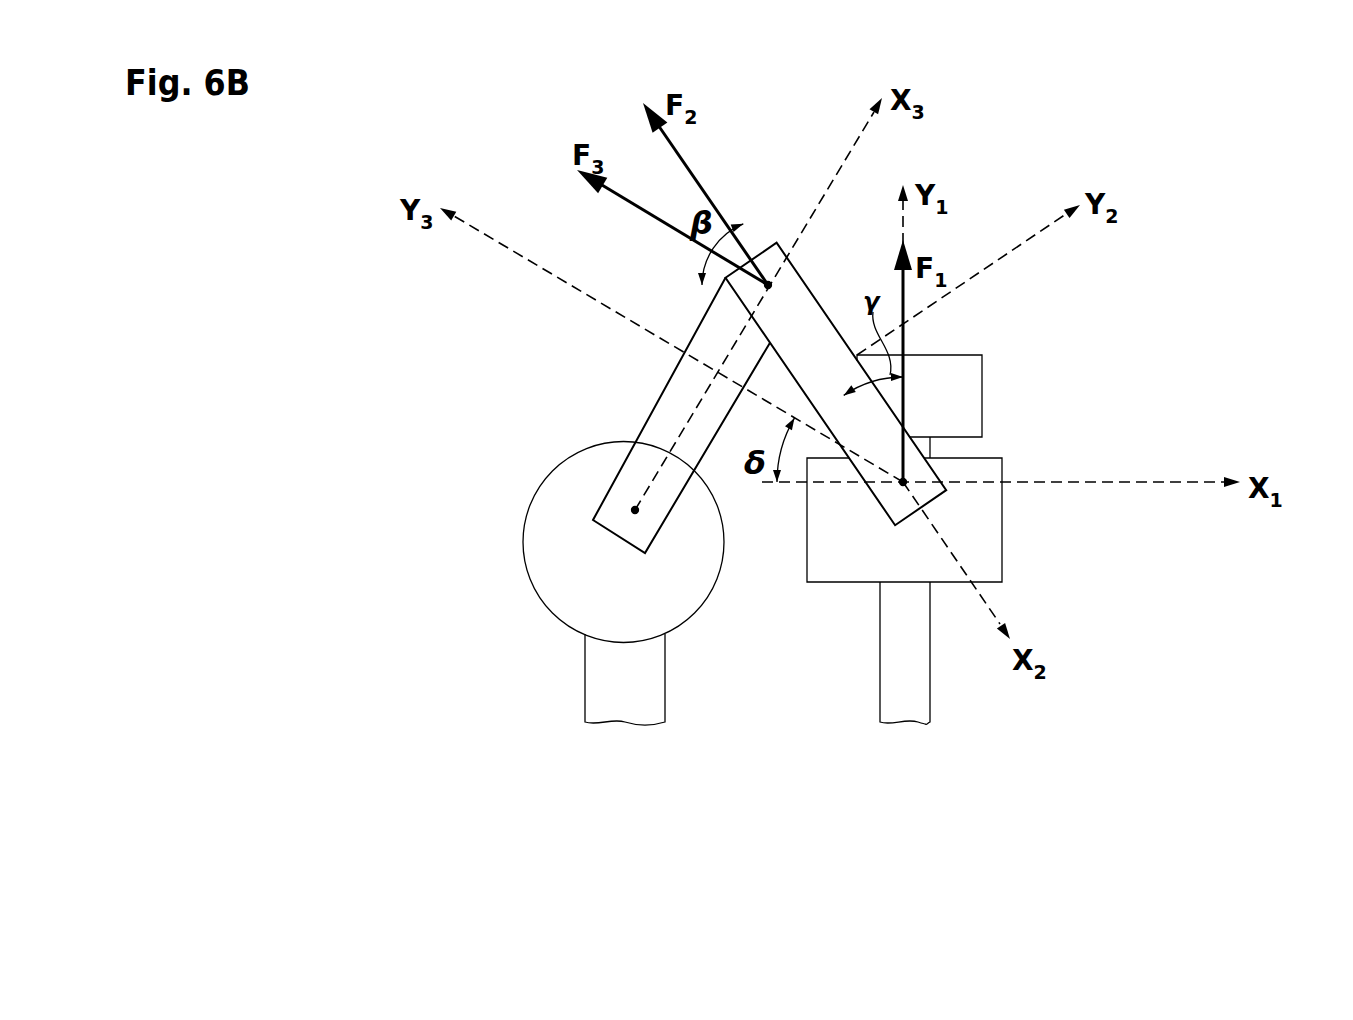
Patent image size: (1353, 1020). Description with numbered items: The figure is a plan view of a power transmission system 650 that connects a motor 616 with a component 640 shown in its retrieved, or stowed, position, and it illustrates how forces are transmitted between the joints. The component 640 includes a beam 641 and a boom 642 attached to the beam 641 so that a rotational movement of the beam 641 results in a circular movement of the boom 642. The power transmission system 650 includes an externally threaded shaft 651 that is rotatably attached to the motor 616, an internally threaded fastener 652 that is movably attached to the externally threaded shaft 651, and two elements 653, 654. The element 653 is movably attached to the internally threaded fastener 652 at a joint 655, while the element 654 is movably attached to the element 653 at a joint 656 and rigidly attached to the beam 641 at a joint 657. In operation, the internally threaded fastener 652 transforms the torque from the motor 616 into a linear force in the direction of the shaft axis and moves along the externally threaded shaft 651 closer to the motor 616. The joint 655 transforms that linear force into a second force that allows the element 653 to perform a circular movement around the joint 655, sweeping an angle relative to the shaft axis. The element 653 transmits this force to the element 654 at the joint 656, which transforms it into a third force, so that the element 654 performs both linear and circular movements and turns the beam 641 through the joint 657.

The motor 616 is at (962, 390).
The component 640 is at (472, 670).
The beam 641 is at (555, 565).
The boom 642 is at (623, 712).
The power transmission system 650 is at (518, 178).
The externally threaded shaft 651 is at (905, 700).
The internally threaded fastener 652 is at (985, 468).
The element 653 is at (820, 330).
The element 654 is at (620, 463).
The joint 655 is at (890, 505).
The joint 656 is at (770, 268).
The joint 657 is at (622, 496).